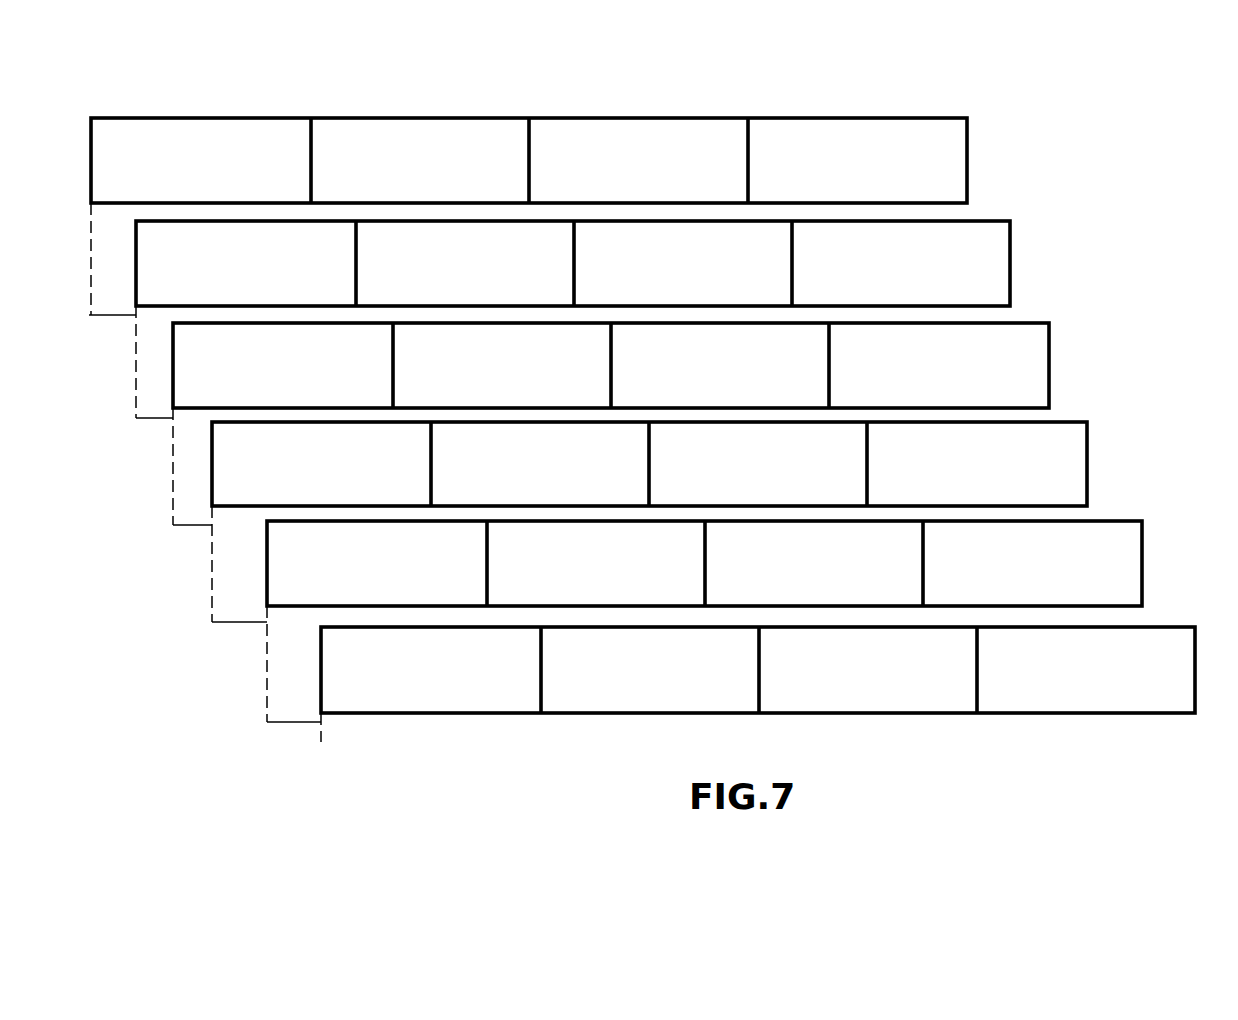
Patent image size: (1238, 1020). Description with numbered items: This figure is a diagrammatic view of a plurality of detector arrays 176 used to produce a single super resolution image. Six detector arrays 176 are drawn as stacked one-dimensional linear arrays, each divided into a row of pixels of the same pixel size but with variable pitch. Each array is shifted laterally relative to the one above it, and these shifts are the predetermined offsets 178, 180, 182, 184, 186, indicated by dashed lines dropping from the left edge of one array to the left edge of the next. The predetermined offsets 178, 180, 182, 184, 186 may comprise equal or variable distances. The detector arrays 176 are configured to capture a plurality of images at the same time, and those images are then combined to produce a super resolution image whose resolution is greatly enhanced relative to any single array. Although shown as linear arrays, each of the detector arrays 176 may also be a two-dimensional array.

The detector arrays 176 is at (995, 110).
The predetermined offset 178 is at (113, 316).
The predetermined offset 180 is at (155, 419).
The predetermined offset 182 is at (195, 526).
The predetermined offset 184 is at (240, 623).
The predetermined offset 186 is at (292, 723).